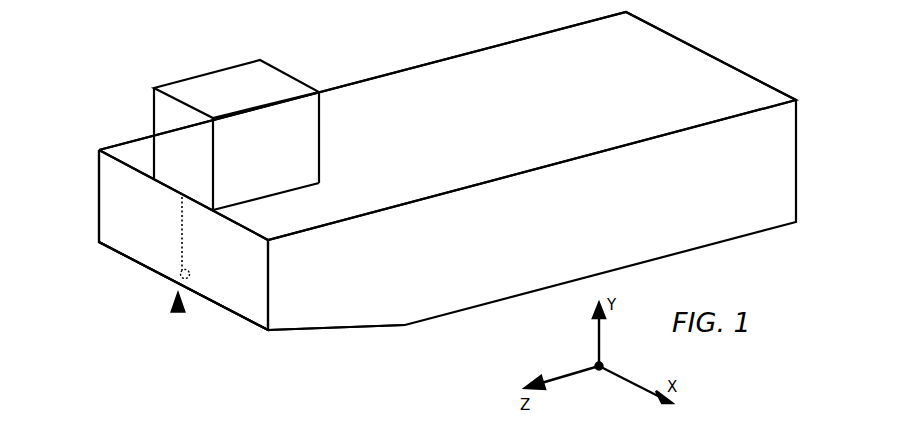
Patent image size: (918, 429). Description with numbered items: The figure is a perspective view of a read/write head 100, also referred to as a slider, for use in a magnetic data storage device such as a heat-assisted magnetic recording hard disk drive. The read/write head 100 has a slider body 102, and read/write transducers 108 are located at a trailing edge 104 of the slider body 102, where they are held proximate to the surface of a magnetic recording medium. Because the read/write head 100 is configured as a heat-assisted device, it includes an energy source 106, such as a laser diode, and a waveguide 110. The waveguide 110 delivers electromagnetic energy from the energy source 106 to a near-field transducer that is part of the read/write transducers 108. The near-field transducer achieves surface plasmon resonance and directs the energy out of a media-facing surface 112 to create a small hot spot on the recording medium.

The read/write head 100 is at (756, 51).
The slider body 102 is at (397, 70).
The trailing edge 104 is at (102, 218).
The energy source 106 is at (238, 77).
The read/write transducers 108 is at (178, 312).
The waveguide 110 is at (182, 235).
The media-facing surface 112 is at (257, 328).